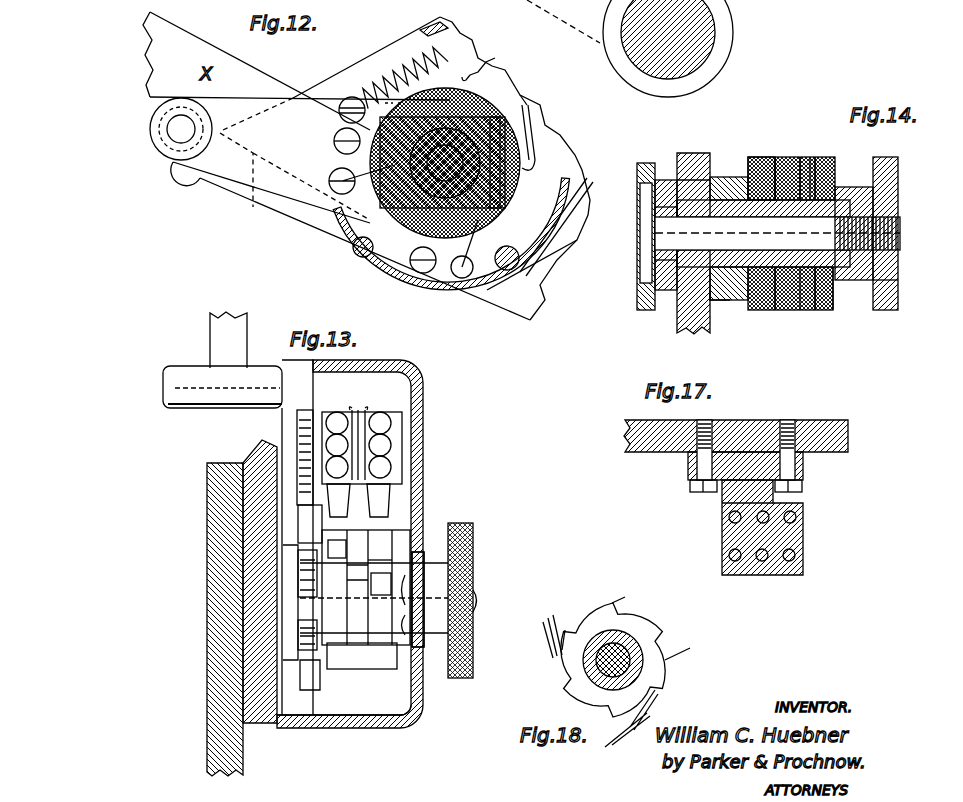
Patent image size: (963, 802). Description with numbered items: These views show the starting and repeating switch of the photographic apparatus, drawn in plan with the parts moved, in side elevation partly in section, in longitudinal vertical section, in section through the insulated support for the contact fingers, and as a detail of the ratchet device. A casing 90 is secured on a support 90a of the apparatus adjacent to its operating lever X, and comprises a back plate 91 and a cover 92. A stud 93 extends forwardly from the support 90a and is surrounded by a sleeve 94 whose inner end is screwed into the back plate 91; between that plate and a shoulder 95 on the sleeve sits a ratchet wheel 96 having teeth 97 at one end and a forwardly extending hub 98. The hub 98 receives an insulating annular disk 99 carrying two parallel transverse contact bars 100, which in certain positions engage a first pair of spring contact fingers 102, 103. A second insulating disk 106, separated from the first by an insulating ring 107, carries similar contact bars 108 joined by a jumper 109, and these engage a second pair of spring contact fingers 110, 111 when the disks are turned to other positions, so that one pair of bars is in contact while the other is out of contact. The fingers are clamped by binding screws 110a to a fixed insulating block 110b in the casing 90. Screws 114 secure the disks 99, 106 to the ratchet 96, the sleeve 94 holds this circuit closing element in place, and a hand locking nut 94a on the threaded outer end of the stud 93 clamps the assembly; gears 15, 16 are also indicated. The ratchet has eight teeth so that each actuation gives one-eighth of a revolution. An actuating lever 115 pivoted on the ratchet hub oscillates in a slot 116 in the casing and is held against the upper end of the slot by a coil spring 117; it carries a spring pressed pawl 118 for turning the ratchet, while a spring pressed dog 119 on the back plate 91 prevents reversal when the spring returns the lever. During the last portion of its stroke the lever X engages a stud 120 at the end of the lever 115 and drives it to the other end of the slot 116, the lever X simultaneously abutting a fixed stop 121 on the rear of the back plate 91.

In FIG. 14, the gear 15 is at (777, 310).
In FIG. 14, the gear 16 is at (807, 310).
In FIG. 13, the casing 90 is at (368, 544).
In FIG. 13, the support 90a is at (240, 752).
In FIG. 14, the support 90a is at (645, 293).
In FIG. 12, the back plate 91 is at (430, 234).
In FIG. 13, the back plate 91 is at (262, 660).
In FIG. 14, the back plate 91 is at (725, 315).
In FIG. 17, the back plate 91 is at (760, 420).
In FIG. 12, the cover 92 is at (567, 200).
In FIG. 13, the cover 92 is at (420, 718).
In FIG. 12, the stud 93 is at (437, 150).
In FIG. 13, the stud 93 is at (474, 600).
In FIG. 14, the stud 93 is at (777, 233).
In FIG. 12, the sleeve 94 is at (505, 185).
In FIG. 13, the sleeve 94 is at (424, 560).
In FIG. 14, the sleeve 94 is at (875, 185).
In FIG. 13, the hand locking nut 94a is at (473, 526).
In FIG. 14, the hand locking nut 94a is at (887, 312).
In FIG. 14, the shoulder 95 is at (862, 280).
In FIG. 13, the ratchet wheel 96 is at (298, 613).
In FIG. 14, the ratchet wheel 96 is at (740, 178).
In FIG. 18, the ratchet wheel 96 is at (655, 640).
In FIG. 13, the teeth 97 is at (300, 602).
In FIG. 14, the teeth 97 is at (745, 310).
In FIG. 18, the teeth 97 is at (657, 624).
In FIG. 14, the hub 98 is at (795, 310).
In FIG. 13, the insulating annular disk 99 is at (366, 587).
In FIG. 14, the insulating annular disk 99 is at (790, 157).
In FIG. 13, the contact bars 100 is at (440, 690).
In FIG. 14, the contact bars 100 is at (758, 310).
In FIG. 13, the spring contact finger 102 is at (339, 500).
In FIG. 17, the spring contact finger 103 is at (722, 506).
In FIG. 12, the insulating disk 106 is at (395, 275).
In FIG. 13, the insulating disk 106 is at (382, 561).
In FIG. 14, the insulating disk 106 is at (835, 163).
In FIG. 13, the insulating ring 107 is at (357, 567).
In FIG. 14, the insulating ring 107 is at (830, 152).
In FIG. 12, the contact bars 108 is at (410, 255).
In FIG. 13, the contact bars 108 is at (384, 570).
In FIG. 14, the contact bars 108 is at (824, 310).
In FIG. 12, the jumper 109 is at (535, 137).
In FIG. 12, the spring contact finger 110 is at (468, 70).
In FIG. 13, the spring contact finger 110 is at (395, 487).
In FIG. 13, the binding screws 110a is at (392, 448).
In FIG. 17, the binding screws 110a is at (790, 562).
In FIG. 13, the insulating block 110b is at (388, 468).
In FIG. 17, the insulating block 110b is at (790, 525).
In FIG. 12, the spring contact finger 111 is at (542, 128).
In FIG. 17, the spring contact finger 111 is at (722, 553).
In FIG. 13, the screws 114 is at (412, 587).
In FIG. 12, the actuating lever 115 is at (322, 117).
In FIG. 13, the actuating lever 115 is at (297, 432).
In FIG. 14, the actuating lever 115 is at (733, 165).
In FIG. 12, the slot 116 is at (420, 30).
In FIG. 12, the coil spring 117 is at (405, 77).
In FIG. 13, the coil spring 117 is at (297, 455).
In FIG. 12, the spring pressed pawl 118 is at (345, 168).
In FIG. 13, the spring pressed pawl 118 is at (298, 515).
In FIG. 18, the spring pressed pawl 118 is at (560, 612).
In FIG. 12, the spring pressed dog 119 is at (455, 272).
In FIG. 13, the spring pressed dog 119 is at (318, 658).
In FIG. 18, the spring pressed dog 119 is at (628, 730).
In FIG. 12, the stud 120 is at (175, 165).
In FIG. 13, the stud 120 is at (222, 387).
In FIG. 12, the fixed stop 121 is at (212, 185).